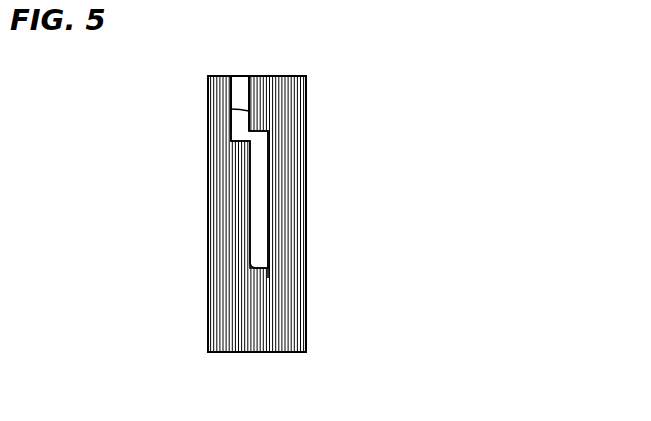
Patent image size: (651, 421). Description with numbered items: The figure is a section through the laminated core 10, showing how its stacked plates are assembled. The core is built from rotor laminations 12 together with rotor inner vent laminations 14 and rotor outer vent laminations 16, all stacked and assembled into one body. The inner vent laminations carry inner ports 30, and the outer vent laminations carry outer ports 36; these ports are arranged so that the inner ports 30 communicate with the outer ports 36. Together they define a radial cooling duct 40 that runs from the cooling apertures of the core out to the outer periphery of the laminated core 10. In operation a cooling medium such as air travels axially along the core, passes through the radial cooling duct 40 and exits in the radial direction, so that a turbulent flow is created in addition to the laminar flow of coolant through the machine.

The laminated core 10 is at (363, 257).
The rotor laminations 12 is at (313, 62).
The rotor inner vent laminations 14 is at (262, 347).
The rotor outer vent laminations 16 is at (236, 347).
The inner ports 30 is at (267, 189).
The outer ports 36 is at (237, 109).
The radial cooling duct 40 is at (244, 84).